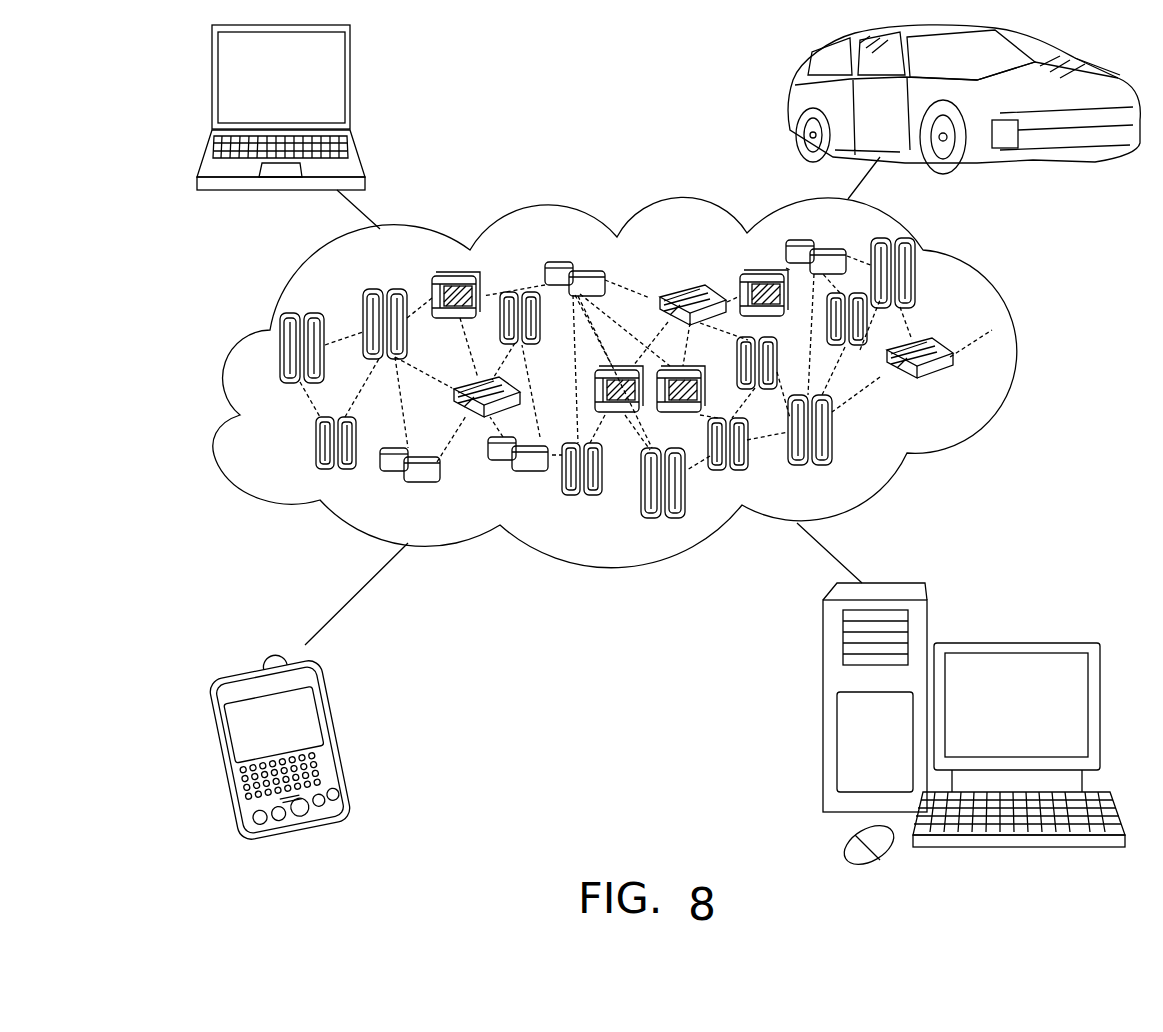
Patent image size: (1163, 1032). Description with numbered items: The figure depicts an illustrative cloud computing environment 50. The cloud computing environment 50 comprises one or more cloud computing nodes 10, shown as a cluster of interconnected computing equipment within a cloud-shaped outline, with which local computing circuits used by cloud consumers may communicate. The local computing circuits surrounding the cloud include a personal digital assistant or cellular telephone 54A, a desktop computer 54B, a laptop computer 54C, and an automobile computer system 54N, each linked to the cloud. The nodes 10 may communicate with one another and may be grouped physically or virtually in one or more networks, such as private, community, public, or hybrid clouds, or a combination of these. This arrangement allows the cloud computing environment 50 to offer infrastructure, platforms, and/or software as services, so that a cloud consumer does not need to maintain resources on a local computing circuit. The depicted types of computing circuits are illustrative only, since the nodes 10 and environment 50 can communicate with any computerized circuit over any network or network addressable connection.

The cloud computing nodes 10 is at (958, 387).
The cloud computing environment 50 is at (1015, 360).
The personal digital assistant (PDA) or cellular telephone 54A is at (338, 737).
The desktop computer 54B is at (1013, 642).
The laptop computer 54C is at (350, 88).
The automobile computer system 54N is at (788, 102).